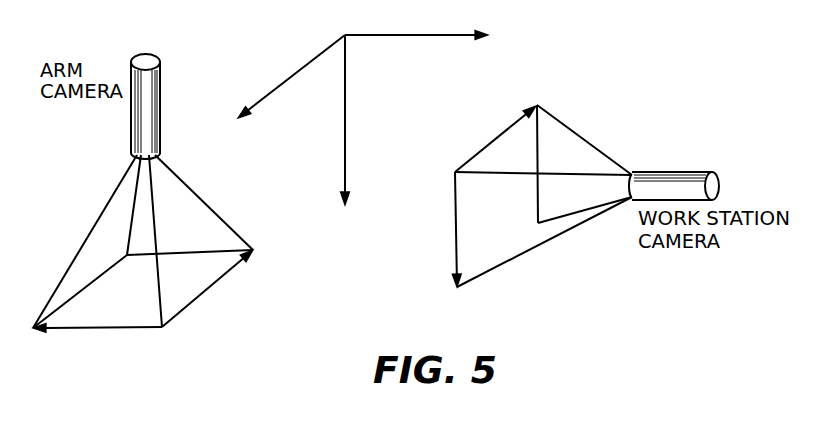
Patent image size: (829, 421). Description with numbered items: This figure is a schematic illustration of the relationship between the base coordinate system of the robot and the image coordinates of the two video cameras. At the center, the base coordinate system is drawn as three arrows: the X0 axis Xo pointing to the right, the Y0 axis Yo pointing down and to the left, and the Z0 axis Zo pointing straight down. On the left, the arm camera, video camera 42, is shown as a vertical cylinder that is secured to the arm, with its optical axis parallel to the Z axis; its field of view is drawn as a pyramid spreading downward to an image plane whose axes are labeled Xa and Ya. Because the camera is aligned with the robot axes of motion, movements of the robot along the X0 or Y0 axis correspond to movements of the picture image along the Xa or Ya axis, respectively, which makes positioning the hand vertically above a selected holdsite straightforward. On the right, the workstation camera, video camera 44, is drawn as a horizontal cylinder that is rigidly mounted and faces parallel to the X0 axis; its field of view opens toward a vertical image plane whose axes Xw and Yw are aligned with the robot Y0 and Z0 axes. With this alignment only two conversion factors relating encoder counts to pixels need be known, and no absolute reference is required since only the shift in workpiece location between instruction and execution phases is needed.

The video camera 42 is at (160, 85).
The video camera 44 is at (686, 172).
The X0 axis Xo is at (429, 32).
The Y0 axis Yo is at (291, 87).
The Z0 axis Zo is at (360, 122).
The Xa axis Xa is at (97, 341).
The Ya axis Ya is at (219, 284).
The Xw axis Xw is at (495, 139).
The Yw axis Yw is at (467, 241).